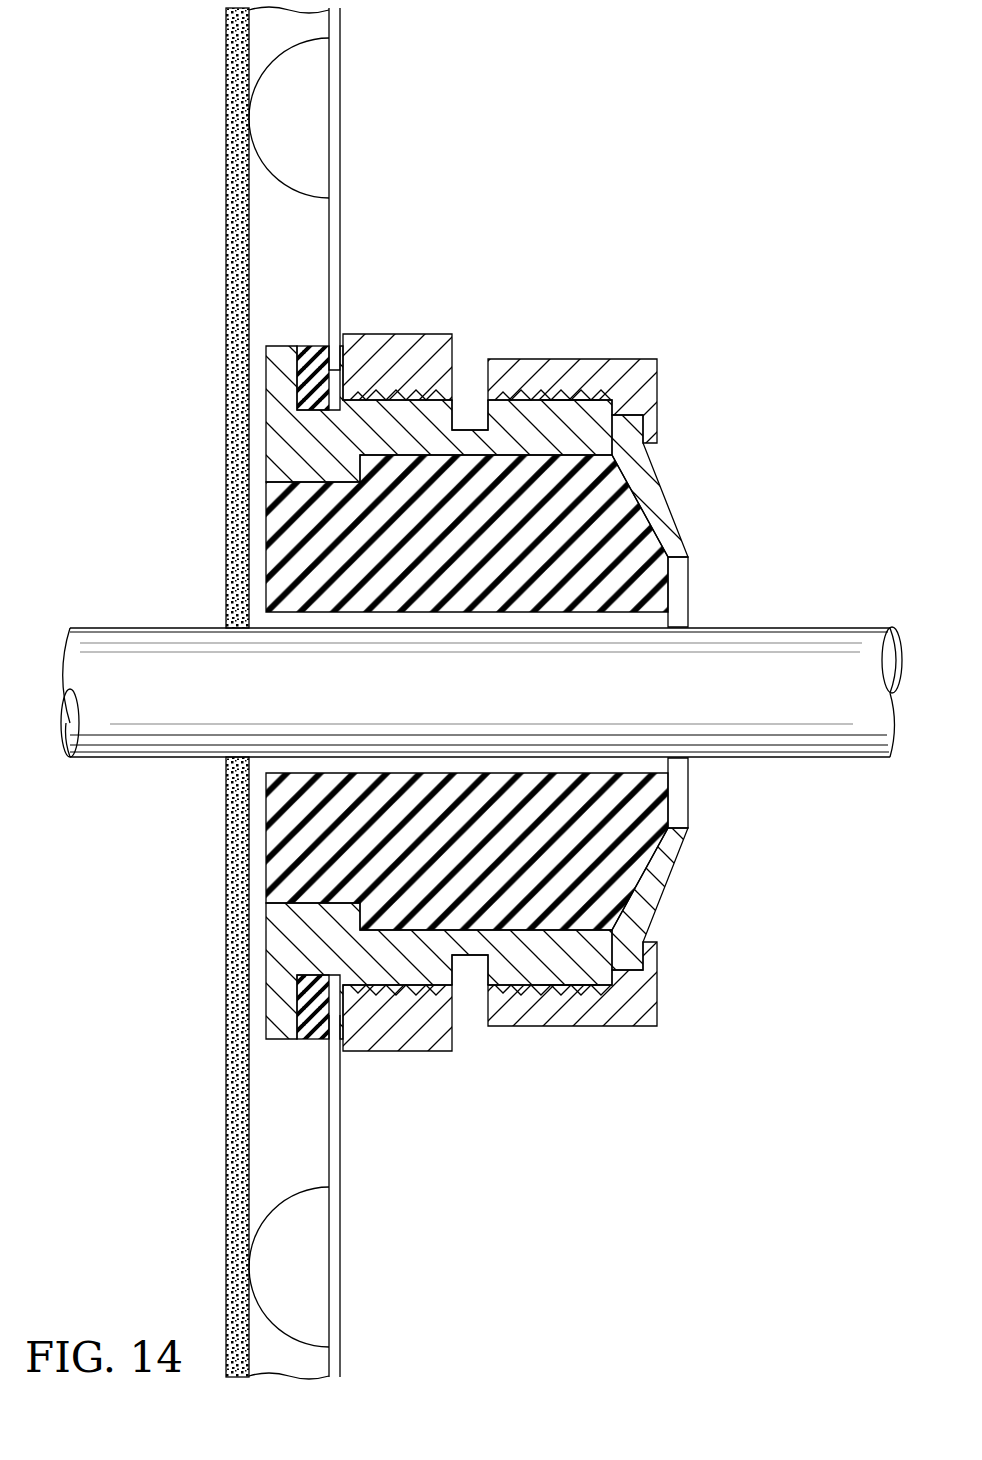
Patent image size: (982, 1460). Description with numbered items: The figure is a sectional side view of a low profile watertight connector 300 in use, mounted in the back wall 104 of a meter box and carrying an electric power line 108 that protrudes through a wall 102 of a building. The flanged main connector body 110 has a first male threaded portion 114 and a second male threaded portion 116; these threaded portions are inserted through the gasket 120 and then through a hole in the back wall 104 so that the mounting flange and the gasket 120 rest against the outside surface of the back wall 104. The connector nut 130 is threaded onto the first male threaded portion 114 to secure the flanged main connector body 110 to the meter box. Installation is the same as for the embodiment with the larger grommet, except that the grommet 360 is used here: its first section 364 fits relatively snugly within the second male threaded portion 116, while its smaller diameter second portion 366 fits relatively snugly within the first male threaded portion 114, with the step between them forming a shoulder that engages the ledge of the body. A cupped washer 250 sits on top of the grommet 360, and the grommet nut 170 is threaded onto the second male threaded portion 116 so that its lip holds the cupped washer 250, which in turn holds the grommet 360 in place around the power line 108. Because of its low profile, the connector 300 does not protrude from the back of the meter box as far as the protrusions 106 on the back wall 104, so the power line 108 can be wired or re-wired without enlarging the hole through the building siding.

The wall 102 is at (237, 135).
The back wall 104 is at (340, 36).
The protrusions 106 is at (280, 53).
The electric power line 108 is at (130, 637).
The flanged main connector body 110 is at (283, 951).
The first male threaded portion 114 is at (438, 390).
The second male threaded portion 116 is at (580, 405).
The gasket 120 is at (312, 1030).
The connector nut 130 is at (370, 333).
The grommet nut 170 is at (657, 385).
The cupped washer 250 is at (660, 883).
The low profile watertight connector 300 is at (660, 150).
The grommet 360 is at (640, 800).
The first section 364 is at (625, 513).
The second portion 366 is at (283, 549).